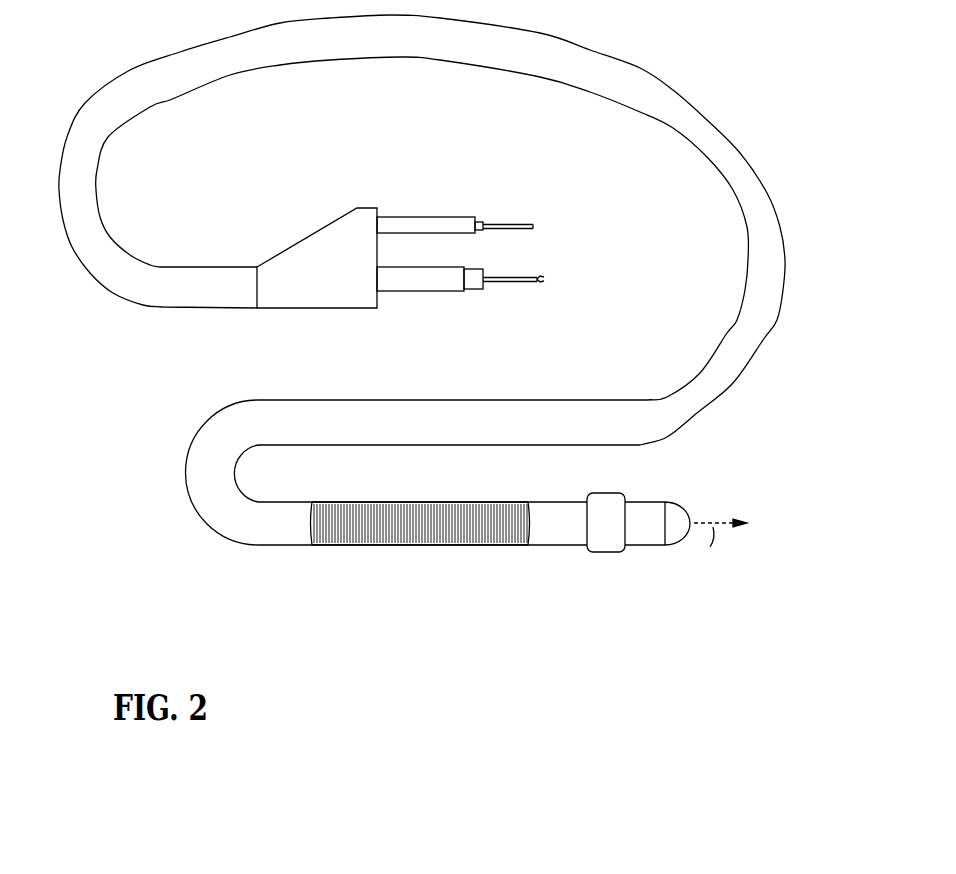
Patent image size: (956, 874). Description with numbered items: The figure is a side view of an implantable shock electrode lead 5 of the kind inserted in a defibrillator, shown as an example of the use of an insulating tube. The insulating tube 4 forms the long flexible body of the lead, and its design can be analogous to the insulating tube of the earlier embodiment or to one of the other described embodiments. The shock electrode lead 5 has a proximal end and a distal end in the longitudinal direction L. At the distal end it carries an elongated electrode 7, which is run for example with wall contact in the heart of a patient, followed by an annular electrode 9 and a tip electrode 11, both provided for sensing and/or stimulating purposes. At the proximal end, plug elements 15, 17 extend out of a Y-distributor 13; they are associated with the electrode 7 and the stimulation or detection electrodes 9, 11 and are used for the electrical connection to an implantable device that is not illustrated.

The insulating tube 4 is at (787, 290).
The shock electrode lead 5 is at (444, 307).
The elongated electrode 7 is at (470, 536).
The annular electrode 9 is at (607, 546).
The tip electrode 11 is at (675, 536).
The Y-distributor 13 is at (340, 309).
The plug element 15 is at (427, 228).
The plug element 17 is at (431, 283).